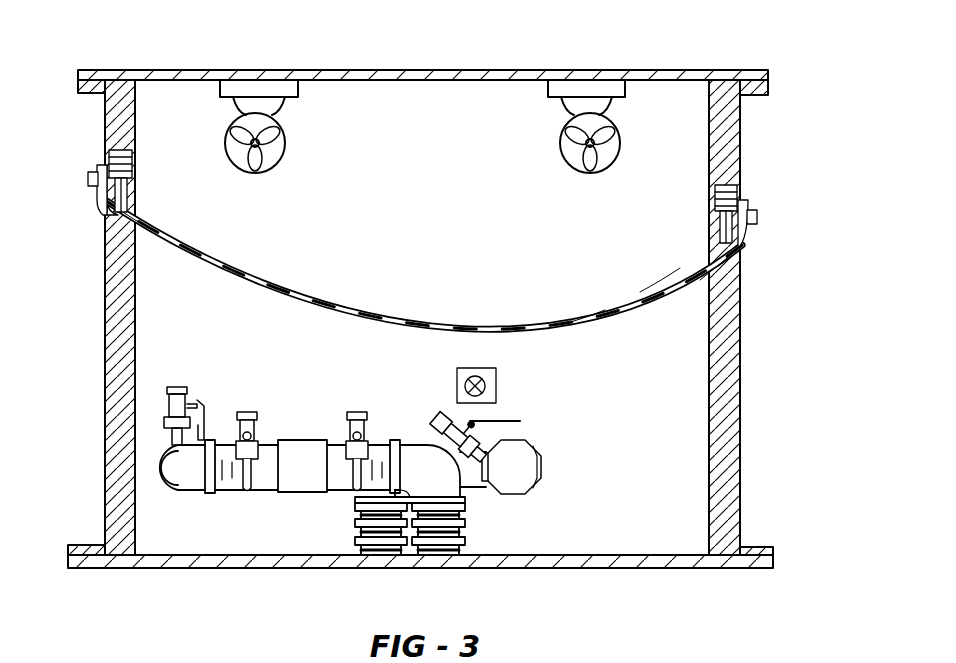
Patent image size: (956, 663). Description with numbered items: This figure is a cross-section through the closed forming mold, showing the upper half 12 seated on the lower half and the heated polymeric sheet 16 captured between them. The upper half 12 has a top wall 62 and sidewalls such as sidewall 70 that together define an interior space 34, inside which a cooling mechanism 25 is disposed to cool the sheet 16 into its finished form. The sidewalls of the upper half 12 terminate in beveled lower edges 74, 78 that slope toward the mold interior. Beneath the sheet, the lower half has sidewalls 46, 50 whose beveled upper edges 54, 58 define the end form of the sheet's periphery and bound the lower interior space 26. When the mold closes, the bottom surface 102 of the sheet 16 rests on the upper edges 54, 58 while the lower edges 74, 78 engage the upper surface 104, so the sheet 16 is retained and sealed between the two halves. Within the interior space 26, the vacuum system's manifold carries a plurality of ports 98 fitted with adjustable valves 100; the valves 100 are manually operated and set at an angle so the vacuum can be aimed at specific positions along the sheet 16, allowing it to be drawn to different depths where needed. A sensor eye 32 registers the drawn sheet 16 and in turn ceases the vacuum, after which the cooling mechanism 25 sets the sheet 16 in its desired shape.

The upper half 12 is at (415, 320).
The sheet of polymeric material 16 is at (423, 272).
The cooling mechanism 25 is at (287, 143).
The interior space 26 is at (326, 491).
The sensor eye 32 is at (497, 383).
The interior space 34 is at (438, 112).
The sidewall 46 is at (103, 338).
The sidewall 50 is at (741, 398).
The upper edge 54 is at (105, 220).
The upper edge 58 is at (771, 218).
The top wall 62 is at (756, 198).
The sidewall 70 is at (742, 132).
The lower edge 74 is at (136, 213).
The lower edge 78 is at (711, 250).
The ports 98 is at (168, 437).
The adjustable valves 100 is at (197, 389).
The bottom surface 102 is at (661, 296).
The upper surface 104 is at (581, 313).